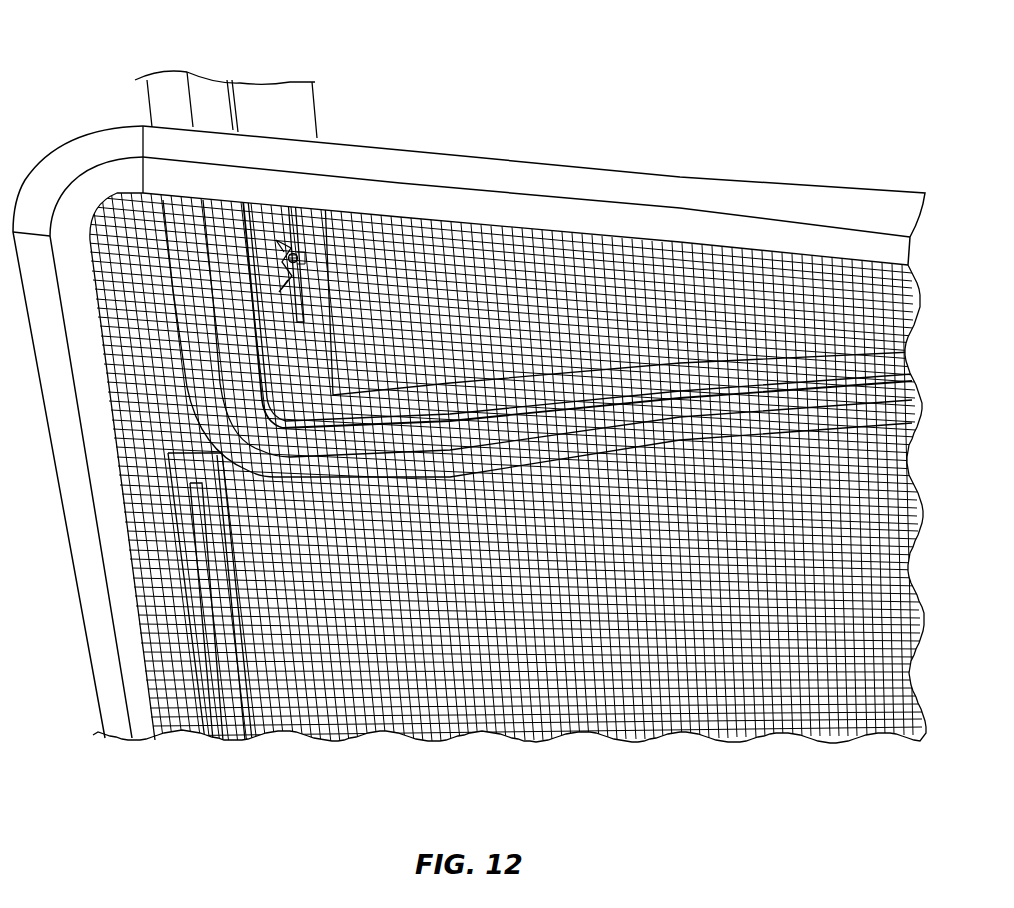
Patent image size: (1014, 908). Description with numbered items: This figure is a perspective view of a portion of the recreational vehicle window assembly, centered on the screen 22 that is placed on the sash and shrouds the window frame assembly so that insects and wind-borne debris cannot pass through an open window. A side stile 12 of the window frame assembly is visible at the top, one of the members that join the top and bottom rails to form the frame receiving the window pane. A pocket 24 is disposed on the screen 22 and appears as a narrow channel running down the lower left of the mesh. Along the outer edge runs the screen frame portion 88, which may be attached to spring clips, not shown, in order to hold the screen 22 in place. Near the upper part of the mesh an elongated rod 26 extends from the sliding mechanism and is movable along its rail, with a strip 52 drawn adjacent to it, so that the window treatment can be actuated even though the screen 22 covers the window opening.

The side stile 12 is at (272, 92).
The screen 22 is at (512, 665).
The pocket 24 is at (223, 671).
The elongated rod 26 is at (306, 258).
The strip 52 is at (300, 284).
The screen frame portion 88 is at (110, 677).